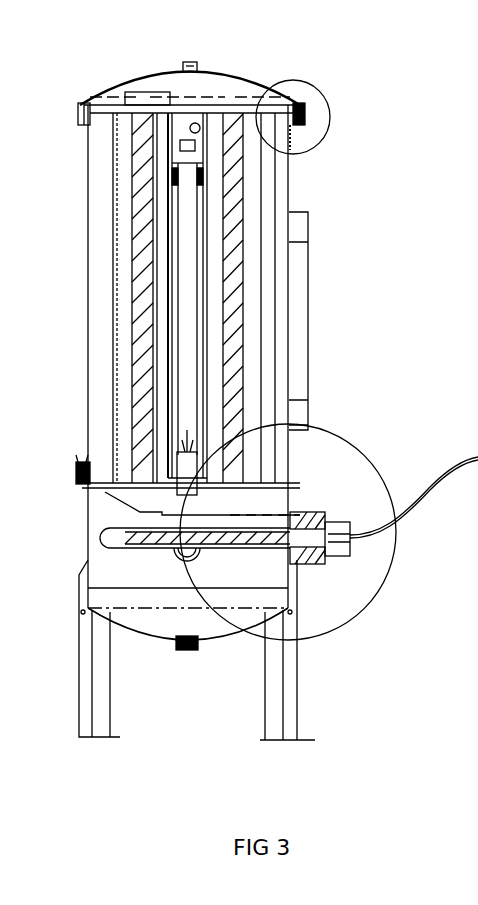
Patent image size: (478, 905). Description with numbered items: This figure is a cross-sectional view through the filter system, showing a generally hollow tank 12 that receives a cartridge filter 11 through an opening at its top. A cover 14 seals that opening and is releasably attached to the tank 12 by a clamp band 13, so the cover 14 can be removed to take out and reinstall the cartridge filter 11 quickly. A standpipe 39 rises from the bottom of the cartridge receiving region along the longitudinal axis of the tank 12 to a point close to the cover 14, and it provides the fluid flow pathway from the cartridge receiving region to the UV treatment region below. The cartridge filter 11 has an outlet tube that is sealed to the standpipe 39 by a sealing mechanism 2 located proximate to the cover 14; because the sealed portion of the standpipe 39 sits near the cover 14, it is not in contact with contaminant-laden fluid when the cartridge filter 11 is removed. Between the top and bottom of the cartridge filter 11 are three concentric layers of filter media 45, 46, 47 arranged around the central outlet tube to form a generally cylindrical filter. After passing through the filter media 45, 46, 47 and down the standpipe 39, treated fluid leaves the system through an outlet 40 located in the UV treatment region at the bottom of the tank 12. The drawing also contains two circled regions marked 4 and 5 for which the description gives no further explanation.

The sealing mechanism 2 is at (175, 183).
The detail circle of clamp 4 is at (320, 145).
The heater / connector assembly 5 is at (390, 590).
The cartridge filter 11 is at (268, 303).
The tank 12 is at (292, 377).
The clamp band 13 is at (310, 100).
The cover 14 is at (240, 70).
The standpipe 39 is at (178, 262).
The outlet 40 is at (188, 652).
The filter media 45 is at (117, 325).
The filter media 46 is at (140, 357).
The filter media 47 is at (165, 398).